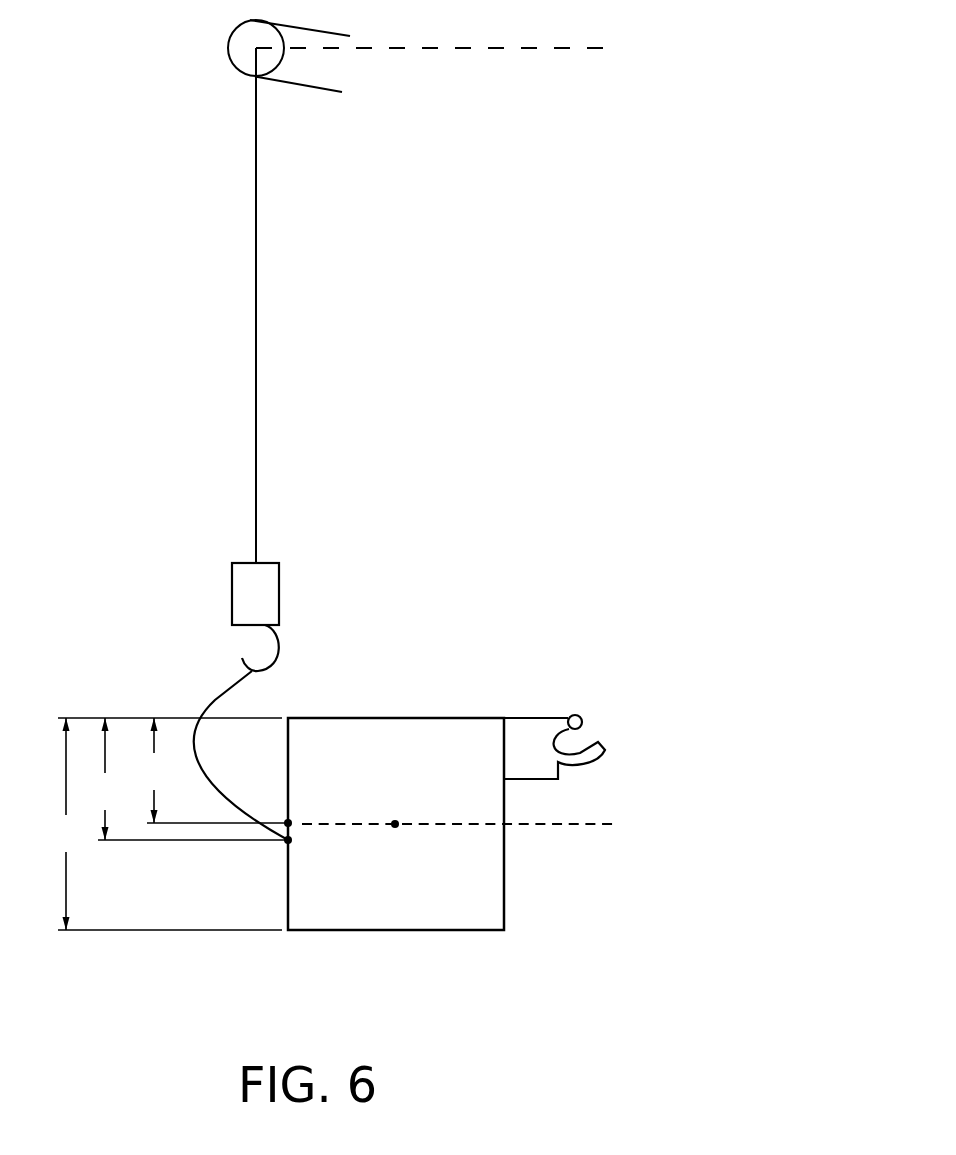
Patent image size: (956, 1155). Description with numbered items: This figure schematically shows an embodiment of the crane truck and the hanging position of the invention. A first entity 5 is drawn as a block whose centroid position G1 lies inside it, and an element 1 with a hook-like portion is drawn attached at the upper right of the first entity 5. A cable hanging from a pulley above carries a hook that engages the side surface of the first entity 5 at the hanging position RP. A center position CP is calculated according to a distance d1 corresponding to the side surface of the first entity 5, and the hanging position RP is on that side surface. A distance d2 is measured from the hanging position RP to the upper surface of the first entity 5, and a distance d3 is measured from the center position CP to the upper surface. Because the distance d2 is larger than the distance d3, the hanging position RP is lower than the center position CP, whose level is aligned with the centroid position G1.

The first entity 5 is at (378, 733).
The device with hook (liftable apparatus) 1 is at (523, 733).
The centroid position G1 is at (458, 805).
The center position CP is at (219, 805).
The hanging position RP is at (195, 857).
The distance d1 is at (66, 824).
The distance d2 is at (105, 779).
The distance d3 is at (154, 770).